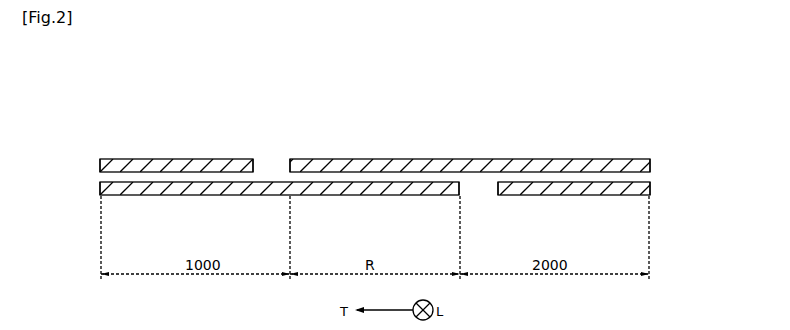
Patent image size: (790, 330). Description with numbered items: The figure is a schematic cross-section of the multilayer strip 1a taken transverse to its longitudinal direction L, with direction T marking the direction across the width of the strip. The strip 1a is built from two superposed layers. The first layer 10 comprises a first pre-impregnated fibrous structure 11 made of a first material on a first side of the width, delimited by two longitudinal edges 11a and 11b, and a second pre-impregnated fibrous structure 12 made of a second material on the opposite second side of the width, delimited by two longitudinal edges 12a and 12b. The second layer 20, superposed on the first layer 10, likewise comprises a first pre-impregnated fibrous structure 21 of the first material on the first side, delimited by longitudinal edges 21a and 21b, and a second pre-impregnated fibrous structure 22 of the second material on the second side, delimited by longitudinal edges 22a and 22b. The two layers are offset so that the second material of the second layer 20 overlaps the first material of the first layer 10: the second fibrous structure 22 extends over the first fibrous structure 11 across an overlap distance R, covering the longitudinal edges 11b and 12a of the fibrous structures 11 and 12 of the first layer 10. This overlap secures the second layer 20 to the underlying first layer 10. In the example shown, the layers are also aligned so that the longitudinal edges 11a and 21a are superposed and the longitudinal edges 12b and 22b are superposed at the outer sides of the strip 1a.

The multilayer strip 1a is at (662, 112).
The first layer 10 is at (655, 188).
The first pre-impregnated fibrous structure 11 is at (136, 195).
The longitudinal edge 11a is at (100, 189).
The longitudinal edge 11b is at (459, 190).
The second pre-impregnated fibrous structure 12 is at (620, 188).
The longitudinal edge 12a is at (498, 189).
The longitudinal edge 12b is at (650, 190).
The second layer 20 is at (655, 164).
The first pre-impregnated fibrous structure 21 is at (137, 165).
The longitudinal edge 21a is at (100, 167).
The longitudinal edge 21b is at (253, 166).
The second pre-impregnated fibrous structure 22 is at (621, 166).
The longitudinal edge 22a is at (290, 166).
The longitudinal edge 22b is at (650, 166).